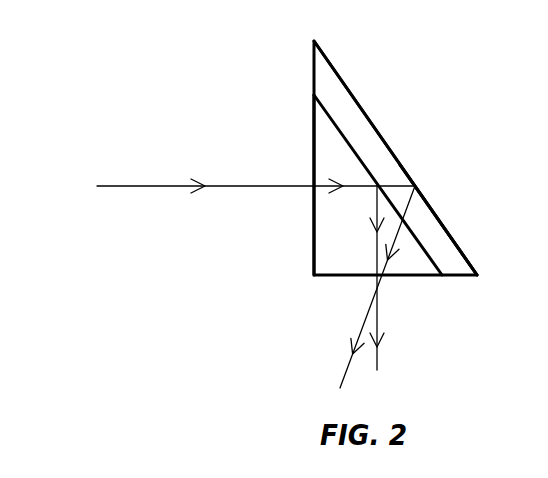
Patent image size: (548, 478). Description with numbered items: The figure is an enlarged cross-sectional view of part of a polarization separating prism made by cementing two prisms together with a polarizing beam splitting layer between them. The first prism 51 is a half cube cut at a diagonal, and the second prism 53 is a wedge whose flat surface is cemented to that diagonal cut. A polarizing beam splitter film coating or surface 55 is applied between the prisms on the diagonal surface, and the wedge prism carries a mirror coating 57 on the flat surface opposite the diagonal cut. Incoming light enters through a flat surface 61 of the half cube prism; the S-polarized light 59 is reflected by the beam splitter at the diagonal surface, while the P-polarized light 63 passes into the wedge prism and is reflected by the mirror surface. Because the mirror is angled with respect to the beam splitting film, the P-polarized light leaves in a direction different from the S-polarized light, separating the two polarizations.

The first prism 51 is at (323, 150).
The second prism 53 is at (340, 95).
The polarizing beam splitter film coating or surface 55 is at (347, 140).
The mirror coating 57 is at (453, 240).
The S-polarized light 59 is at (378, 355).
The flat surface 61 is at (314, 244).
The P-polarized light 63 is at (351, 354).